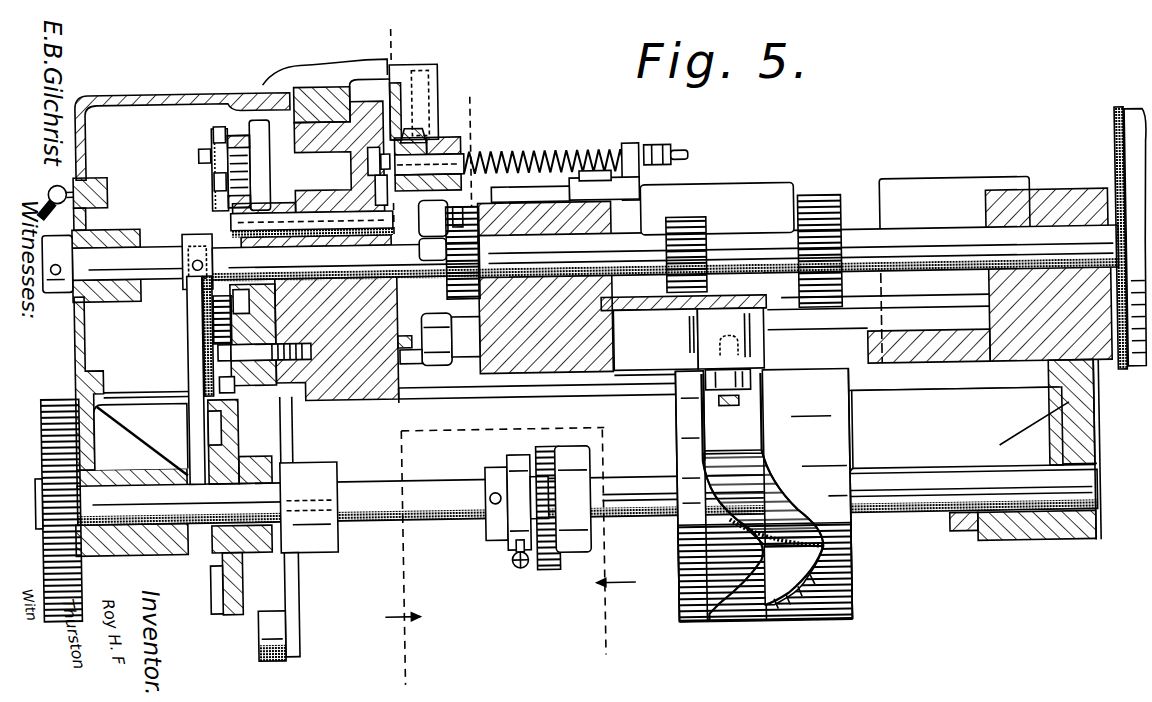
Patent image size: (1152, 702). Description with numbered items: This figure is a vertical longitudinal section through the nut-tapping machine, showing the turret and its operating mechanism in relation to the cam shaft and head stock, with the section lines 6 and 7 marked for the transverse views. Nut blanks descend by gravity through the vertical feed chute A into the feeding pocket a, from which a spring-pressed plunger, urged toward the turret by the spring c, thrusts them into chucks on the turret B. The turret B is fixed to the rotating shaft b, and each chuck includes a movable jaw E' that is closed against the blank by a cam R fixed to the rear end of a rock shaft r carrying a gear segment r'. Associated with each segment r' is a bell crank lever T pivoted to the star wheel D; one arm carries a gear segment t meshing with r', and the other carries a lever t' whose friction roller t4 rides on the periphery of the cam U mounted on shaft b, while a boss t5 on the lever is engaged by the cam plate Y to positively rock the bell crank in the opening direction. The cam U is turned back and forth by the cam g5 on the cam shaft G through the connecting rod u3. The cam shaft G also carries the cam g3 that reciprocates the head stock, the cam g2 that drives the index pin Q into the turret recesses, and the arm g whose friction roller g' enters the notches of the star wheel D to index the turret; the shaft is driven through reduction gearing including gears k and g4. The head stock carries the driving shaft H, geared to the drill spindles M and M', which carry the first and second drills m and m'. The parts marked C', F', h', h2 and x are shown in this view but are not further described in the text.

The vertical feed chute A is at (429, 65).
The turret B is at (483, 434).
The hub C' is at (429, 147).
The star wheel D is at (319, 258).
The movable chuck jaw E' is at (343, 184).
The frame bar F' is at (728, 383).
The cam shaft G is at (974, 455).
The driving shaft H is at (937, 241).
The first drill spindle M is at (629, 188).
The second drill spindle M' is at (439, 349).
The index pin Q is at (322, 249).
The cam R is at (440, 205).
The bell crank lever T is at (239, 135).
The cam U is at (220, 214).
The cam plate Y is at (204, 393).
The feeding pocket a is at (432, 200).
The rotating shaft b is at (167, 241).
The spring c is at (567, 159).
The arm g is at (588, 521).
The friction roller g' is at (272, 651).
The cam g2 is at (511, 538).
The cam g3 is at (744, 455).
The gear g4 is at (68, 564).
The cam g5 is at (211, 571).
The gear h' is at (834, 238).
The pinion h2 is at (703, 224).
The gear k is at (1131, 158).
The first drill m is at (421, 259).
The second drill m' is at (411, 317).
The rock shaft r is at (311, 205).
The gear segment r' is at (201, 198).
The gear segment t is at (243, 260).
The lever t' is at (195, 249).
The friction roller t4 is at (215, 176).
The boss t5 is at (208, 142).
The connecting rod u3 is at (190, 323).
The pin x is at (370, 155).
The section line 6- 6 is at (509, 340).
The section line 7- 7 is at (427, 388).